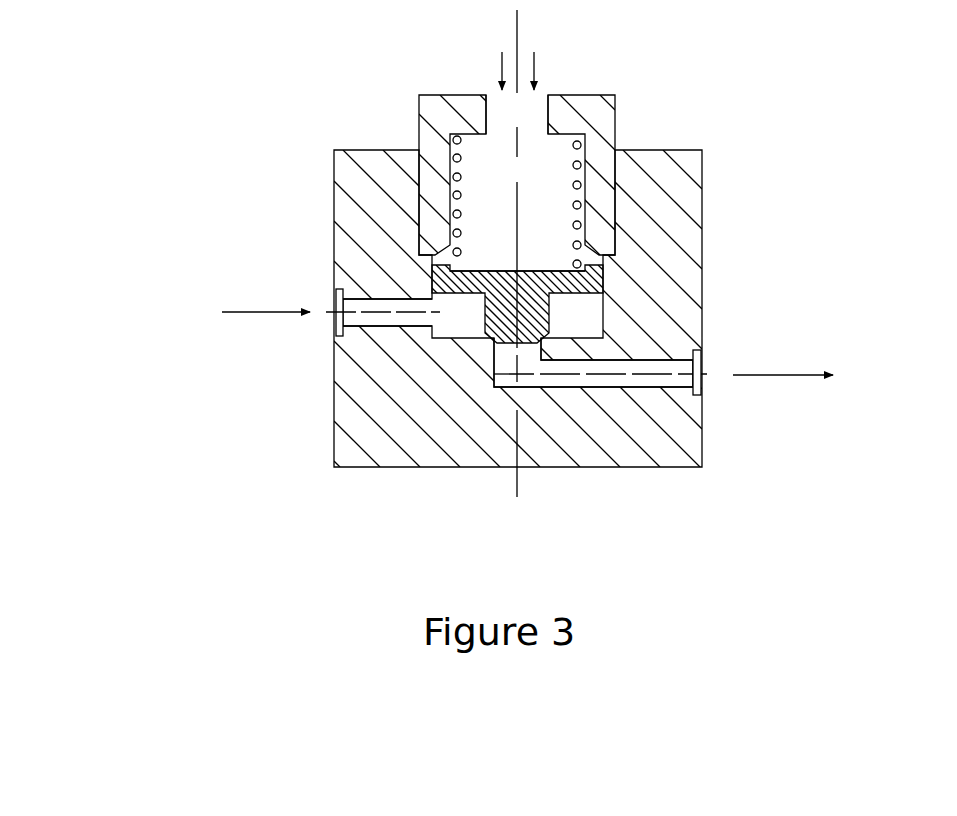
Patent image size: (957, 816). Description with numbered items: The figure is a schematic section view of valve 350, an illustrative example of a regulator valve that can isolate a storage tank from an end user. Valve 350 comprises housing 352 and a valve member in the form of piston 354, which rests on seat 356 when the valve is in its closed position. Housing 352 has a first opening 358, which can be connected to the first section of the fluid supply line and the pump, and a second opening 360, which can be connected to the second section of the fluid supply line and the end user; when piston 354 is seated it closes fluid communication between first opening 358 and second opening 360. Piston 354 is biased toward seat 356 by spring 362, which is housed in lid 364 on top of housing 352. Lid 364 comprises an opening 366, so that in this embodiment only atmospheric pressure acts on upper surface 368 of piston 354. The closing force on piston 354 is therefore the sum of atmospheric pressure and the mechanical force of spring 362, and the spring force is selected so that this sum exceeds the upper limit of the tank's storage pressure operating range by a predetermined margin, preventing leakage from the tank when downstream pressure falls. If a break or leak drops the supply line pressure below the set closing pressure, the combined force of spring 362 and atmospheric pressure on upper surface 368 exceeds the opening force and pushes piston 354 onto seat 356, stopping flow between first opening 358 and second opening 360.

The valve 350 is at (232, 98).
The housing 352 is at (685, 187).
The piston 354 is at (585, 283).
The seat 356 is at (543, 339).
The first opening 358 is at (332, 320).
The second opening 360 is at (705, 382).
The spring 362 is at (582, 158).
The lid 364 is at (428, 135).
The opening 366 is at (490, 112).
The upper surface 368 is at (532, 270).